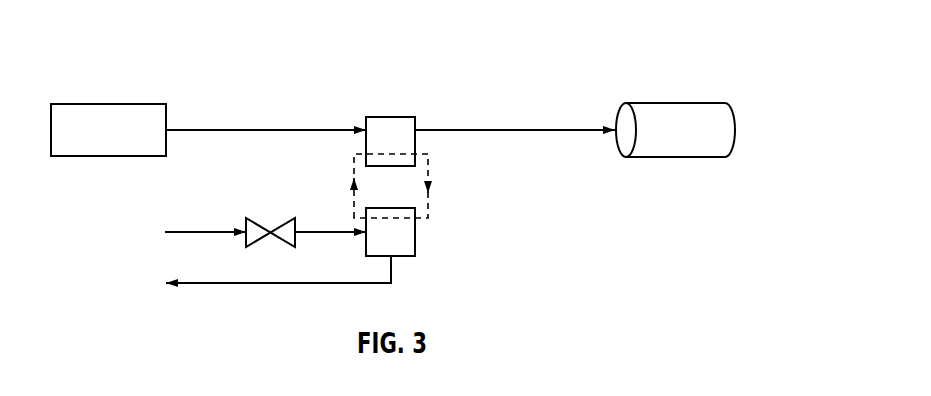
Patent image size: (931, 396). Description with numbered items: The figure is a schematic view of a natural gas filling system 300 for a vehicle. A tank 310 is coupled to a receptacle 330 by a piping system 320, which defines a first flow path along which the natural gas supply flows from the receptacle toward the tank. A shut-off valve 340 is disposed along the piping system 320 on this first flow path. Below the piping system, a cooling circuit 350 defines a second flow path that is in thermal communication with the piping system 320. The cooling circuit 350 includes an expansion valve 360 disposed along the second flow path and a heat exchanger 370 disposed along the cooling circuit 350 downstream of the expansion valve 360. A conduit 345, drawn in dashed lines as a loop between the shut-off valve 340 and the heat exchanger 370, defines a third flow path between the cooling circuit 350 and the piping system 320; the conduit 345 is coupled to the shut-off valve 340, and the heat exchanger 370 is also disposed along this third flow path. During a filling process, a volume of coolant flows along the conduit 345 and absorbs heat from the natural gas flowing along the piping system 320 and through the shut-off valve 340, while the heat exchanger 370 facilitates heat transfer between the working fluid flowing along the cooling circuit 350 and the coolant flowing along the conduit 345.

The natural gas filling system 300 is at (710, 57).
The tank 310 is at (699, 143).
The piping system 320 is at (256, 130).
The receptacle 330 is at (127, 142).
The shut-off valve 340 is at (392, 117).
The conduit 345 is at (428, 170).
The cooling circuit 350 is at (391, 267).
The expansion valve 360 is at (285, 223).
The heat exchanger 370 is at (415, 232).